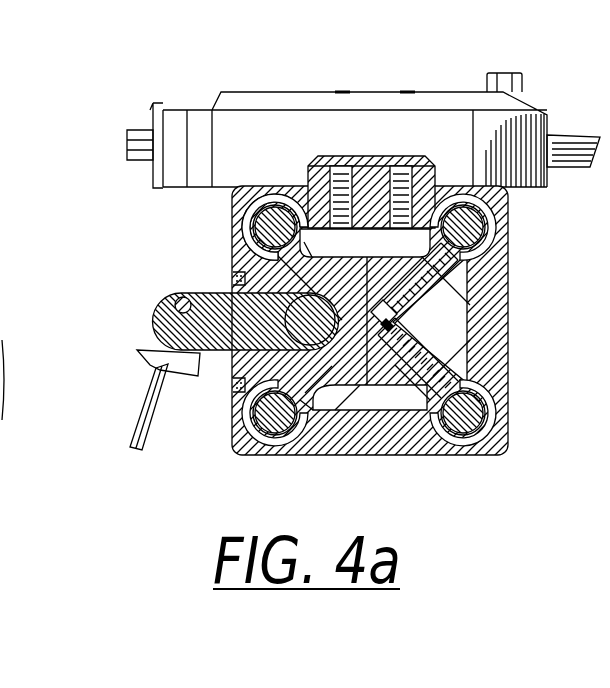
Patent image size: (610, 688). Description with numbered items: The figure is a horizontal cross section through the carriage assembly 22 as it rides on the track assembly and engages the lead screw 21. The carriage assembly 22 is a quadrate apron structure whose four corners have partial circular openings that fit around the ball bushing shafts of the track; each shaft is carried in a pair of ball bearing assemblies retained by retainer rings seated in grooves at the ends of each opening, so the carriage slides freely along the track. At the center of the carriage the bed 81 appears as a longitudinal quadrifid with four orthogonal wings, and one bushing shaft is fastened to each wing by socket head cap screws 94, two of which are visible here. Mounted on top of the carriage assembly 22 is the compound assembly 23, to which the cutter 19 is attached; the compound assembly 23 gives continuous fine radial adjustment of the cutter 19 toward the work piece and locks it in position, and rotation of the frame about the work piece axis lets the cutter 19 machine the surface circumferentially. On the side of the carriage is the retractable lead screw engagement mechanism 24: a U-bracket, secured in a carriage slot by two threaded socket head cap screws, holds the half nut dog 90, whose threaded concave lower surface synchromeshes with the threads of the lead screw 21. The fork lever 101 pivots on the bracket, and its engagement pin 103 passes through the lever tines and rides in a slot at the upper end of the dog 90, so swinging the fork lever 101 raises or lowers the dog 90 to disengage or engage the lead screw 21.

The cutter 19 is at (560, 137).
The lead screw 21 is at (246, 321).
The carriage assembly 22 is at (342, 450).
The compound assembly 23 is at (397, 92).
The lead screw engagement mechanism 24 is at (113, 418).
The bed 81 is at (357, 383).
The half nut dog 90 is at (248, 331).
The socket head cap screws 94 is at (398, 332).
The fork lever 101 is at (146, 345).
The engagement pin 103 is at (177, 298).